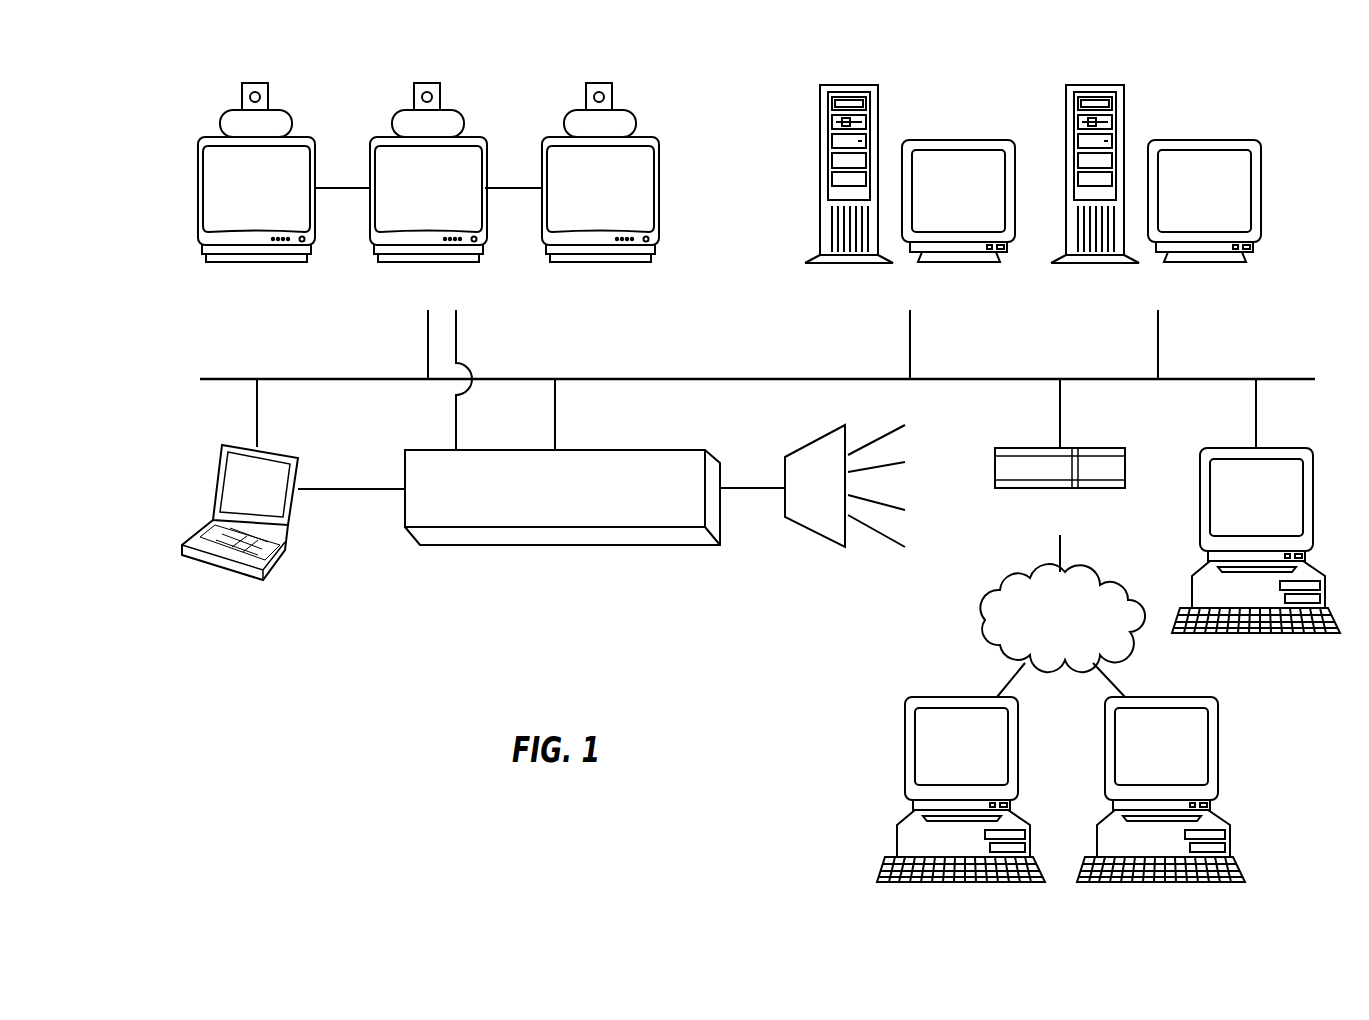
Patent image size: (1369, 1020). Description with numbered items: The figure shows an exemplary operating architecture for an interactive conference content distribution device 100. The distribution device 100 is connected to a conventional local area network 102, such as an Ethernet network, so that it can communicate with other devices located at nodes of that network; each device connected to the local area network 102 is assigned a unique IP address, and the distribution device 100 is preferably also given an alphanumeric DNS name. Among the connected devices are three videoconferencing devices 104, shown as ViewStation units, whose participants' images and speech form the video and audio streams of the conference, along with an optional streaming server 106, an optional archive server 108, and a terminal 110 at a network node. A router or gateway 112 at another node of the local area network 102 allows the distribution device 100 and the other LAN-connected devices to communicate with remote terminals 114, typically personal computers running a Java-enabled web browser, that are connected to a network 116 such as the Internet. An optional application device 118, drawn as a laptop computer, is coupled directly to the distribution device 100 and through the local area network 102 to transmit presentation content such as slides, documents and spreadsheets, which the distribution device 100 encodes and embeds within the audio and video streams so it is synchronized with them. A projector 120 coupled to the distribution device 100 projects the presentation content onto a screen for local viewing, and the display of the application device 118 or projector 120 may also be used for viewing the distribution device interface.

The distribution device 100 is at (613, 449).
The local area network 102 is at (322, 377).
The videoconferencing device 104 is at (258, 83).
The streaming server 106 is at (955, 140).
The archive server 108 is at (1205, 140).
The terminal 110 is at (1280, 447).
The router or gateway 112 is at (1105, 447).
The remote terminal 114 is at (948, 697).
The network 116 is at (985, 617).
The application device 118 is at (205, 528).
The projector 120 is at (812, 440).